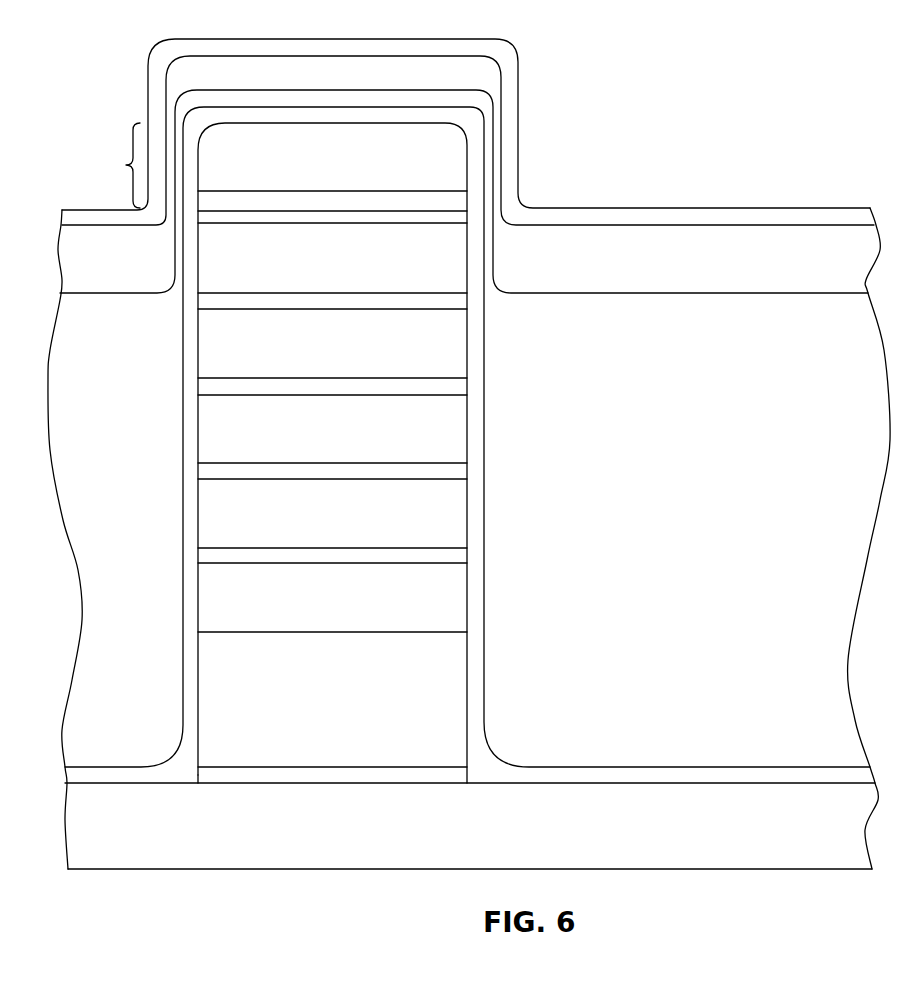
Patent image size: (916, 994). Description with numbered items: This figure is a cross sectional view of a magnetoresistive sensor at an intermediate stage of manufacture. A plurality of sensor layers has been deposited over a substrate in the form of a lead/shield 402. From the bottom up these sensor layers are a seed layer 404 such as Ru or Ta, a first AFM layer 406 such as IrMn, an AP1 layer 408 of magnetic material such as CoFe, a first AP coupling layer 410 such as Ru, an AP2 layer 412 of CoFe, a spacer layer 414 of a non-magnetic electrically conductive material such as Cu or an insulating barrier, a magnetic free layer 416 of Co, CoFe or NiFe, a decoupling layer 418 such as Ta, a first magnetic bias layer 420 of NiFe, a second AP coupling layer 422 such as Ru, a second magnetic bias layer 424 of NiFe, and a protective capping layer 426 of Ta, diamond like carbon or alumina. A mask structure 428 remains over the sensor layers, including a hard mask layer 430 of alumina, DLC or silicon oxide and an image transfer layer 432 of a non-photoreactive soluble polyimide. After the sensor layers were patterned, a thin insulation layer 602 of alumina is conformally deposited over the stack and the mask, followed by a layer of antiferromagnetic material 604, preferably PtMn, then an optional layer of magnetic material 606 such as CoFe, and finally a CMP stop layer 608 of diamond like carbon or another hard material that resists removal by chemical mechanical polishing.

The lead/shield 402 is at (470, 826).
The seed layer 404 is at (343, 773).
The first AFM layer 406 is at (275, 690).
The AP1 layer 408 is at (275, 595).
The first AP coupling layer 410 is at (365, 555).
The AP2 layer 412 is at (262, 505).
The spacer layer 414 is at (362, 470).
The magnetic free layer 416 is at (275, 425).
The decoupling layer 418 is at (365, 385).
The first magnetic bias layer 420 is at (263, 337).
The second AP coupling layer 422 is at (360, 300).
The second magnetic bias layer 424 is at (262, 253).
The capping layer 426 is at (347, 219).
The mask structure 428 is at (140, 128).
The hard mask layer 430 is at (368, 200).
The image transfer layer 432 is at (298, 157).
The insulation layer 602 is at (185, 754).
The layer of antiferromagnetic material 604 is at (140, 448).
The layer of magnetic material 606 is at (156, 255).
The CMP stop layer 608 is at (97, 217).